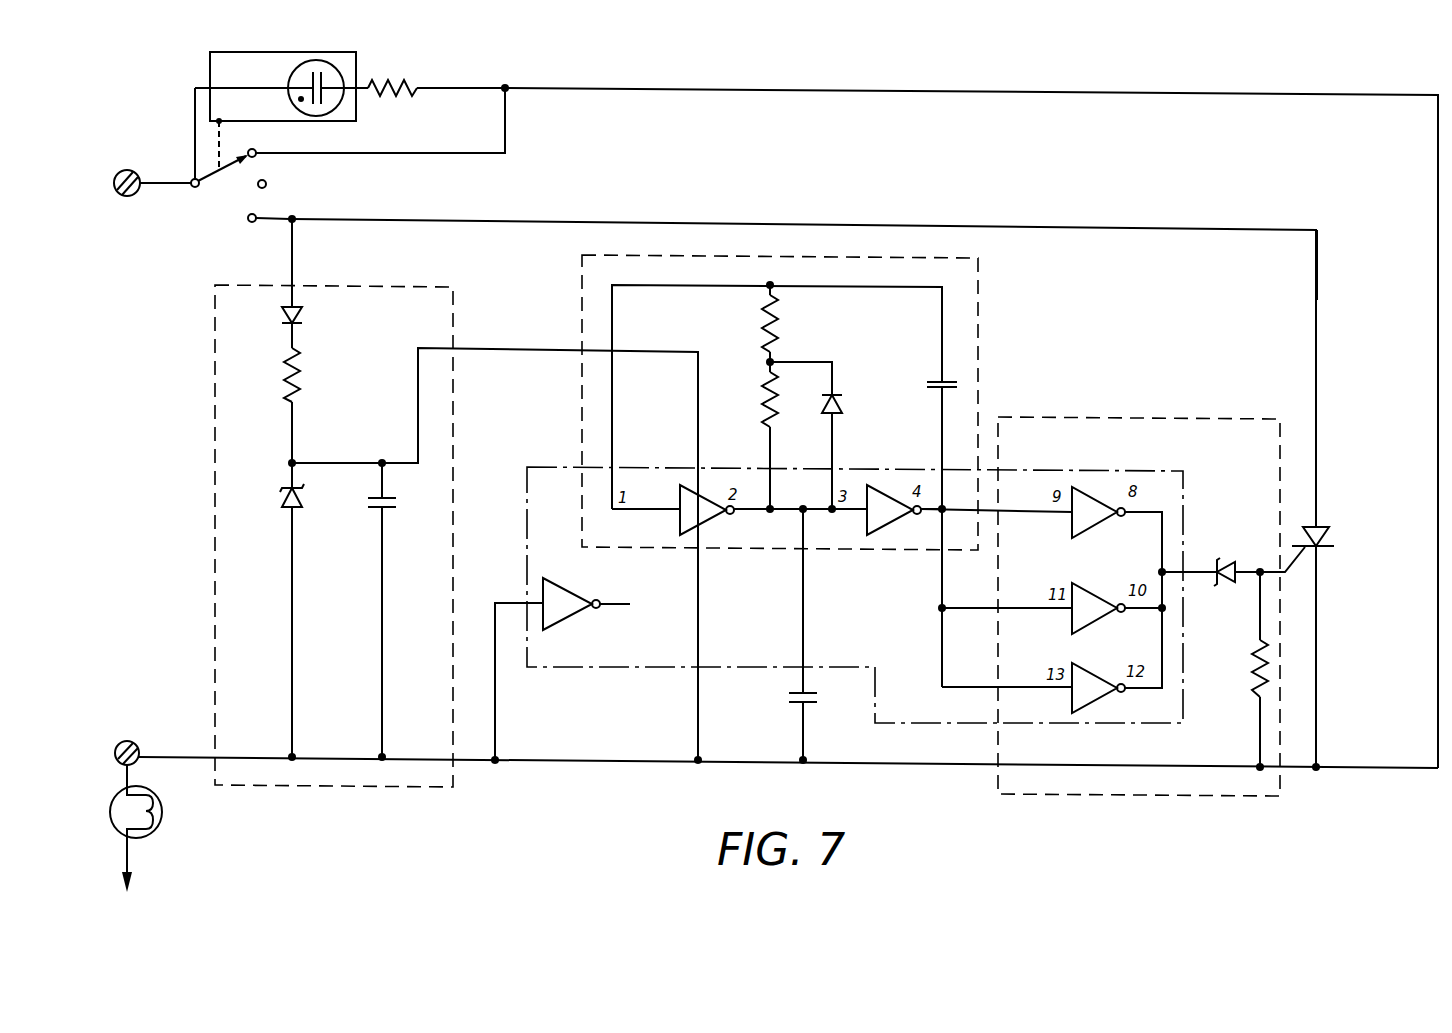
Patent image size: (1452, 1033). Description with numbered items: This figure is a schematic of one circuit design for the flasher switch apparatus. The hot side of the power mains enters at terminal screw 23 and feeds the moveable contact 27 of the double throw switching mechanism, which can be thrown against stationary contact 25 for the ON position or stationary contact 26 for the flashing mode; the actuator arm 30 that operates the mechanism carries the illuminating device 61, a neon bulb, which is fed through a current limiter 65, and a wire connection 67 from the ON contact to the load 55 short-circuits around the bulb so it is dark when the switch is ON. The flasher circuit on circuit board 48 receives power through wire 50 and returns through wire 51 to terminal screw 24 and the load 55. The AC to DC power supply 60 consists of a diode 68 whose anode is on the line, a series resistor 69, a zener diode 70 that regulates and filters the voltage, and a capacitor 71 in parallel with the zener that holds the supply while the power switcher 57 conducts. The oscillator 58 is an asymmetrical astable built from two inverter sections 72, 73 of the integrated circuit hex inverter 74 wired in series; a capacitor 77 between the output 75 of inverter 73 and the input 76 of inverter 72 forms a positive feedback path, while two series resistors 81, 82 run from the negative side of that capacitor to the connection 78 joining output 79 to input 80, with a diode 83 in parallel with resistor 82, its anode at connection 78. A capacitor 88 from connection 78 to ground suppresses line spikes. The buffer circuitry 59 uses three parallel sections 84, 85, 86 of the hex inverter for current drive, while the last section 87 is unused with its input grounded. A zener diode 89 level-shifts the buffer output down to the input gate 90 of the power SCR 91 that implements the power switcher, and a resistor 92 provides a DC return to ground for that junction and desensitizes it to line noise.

The terminal screw 23 is at (140, 175).
The terminal screw 24 is at (124, 742).
The stationary contact 25 is at (258, 154).
The stationary contact 26 is at (247, 219).
The moveable contact 27 is at (236, 168).
The actuator arm 30 is at (357, 63).
The circuit board 48 is at (1174, 220).
The wire 50 is at (293, 216).
The wire 51 is at (177, 742).
The load 55 is at (178, 772).
The power switcher 57 is at (1334, 554).
The oscillator 58 is at (979, 273).
The buffer circuitry 59 is at (1148, 417).
The AC to DC power supply 60 is at (403, 285).
The illuminating device 61 is at (333, 108).
The current limiter 65 is at (410, 82).
The wire connection 67 is at (508, 150).
The diode 68 is at (303, 318).
The resistor 69 is at (303, 386).
The zener diode 70 is at (296, 513).
The capacitor 71 is at (368, 503).
The inverter section 72 is at (680, 493).
The inverter section 73 is at (887, 538).
The integrated circuit hex inverter 74 is at (562, 672).
The output of inverter 73 75 is at (918, 515).
The input of inverter 72 76 is at (680, 520).
The capacitor 77 is at (928, 383).
The connection 78 is at (800, 500).
The output of inverter 72 79 is at (735, 520).
The input of inverter 73 80 is at (860, 515).
The resistor 81 is at (765, 318).
The resistor 82 is at (765, 391).
The diode 83 is at (824, 418).
The inverter section 84 is at (1090, 528).
The inverter section 85 is at (1090, 622).
The inverter section 86 is at (1092, 702).
The inverter section 87 is at (568, 620).
The capacitor 88 is at (818, 698).
The zener diode 89 is at (1225, 586).
The input gate 90 is at (1300, 570).
The power SCR 91 is at (1324, 530).
The resistor 92 is at (1252, 645).